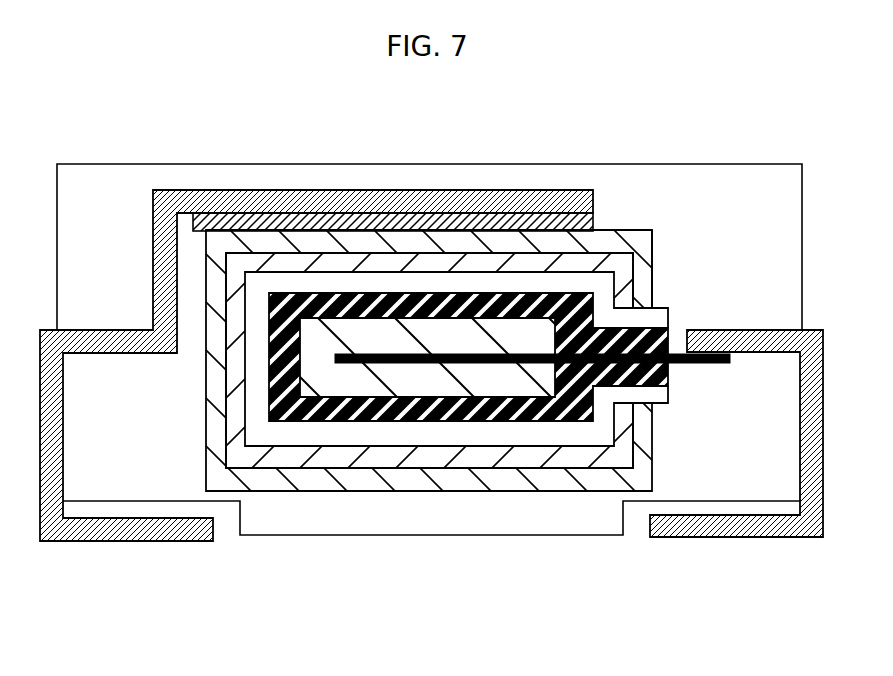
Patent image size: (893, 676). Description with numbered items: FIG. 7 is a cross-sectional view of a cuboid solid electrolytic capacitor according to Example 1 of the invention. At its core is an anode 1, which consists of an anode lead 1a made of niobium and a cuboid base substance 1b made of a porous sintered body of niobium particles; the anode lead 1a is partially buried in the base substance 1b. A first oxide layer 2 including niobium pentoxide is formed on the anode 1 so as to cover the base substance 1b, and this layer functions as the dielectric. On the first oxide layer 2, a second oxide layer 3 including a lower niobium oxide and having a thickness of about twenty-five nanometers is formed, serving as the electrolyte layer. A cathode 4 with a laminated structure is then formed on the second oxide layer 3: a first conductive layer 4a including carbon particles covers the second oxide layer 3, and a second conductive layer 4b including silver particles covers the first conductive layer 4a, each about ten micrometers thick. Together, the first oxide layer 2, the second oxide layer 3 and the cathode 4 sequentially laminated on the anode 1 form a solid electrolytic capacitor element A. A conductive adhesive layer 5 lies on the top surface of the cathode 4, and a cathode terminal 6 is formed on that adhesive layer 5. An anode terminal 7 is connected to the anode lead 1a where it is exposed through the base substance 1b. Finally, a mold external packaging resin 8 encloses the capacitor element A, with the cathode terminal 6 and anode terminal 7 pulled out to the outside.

The anode 1 is at (499, 457).
The anode lead 1a is at (683, 362).
The base substance 1b is at (551, 392).
The first oxide layer 2 is at (323, 422).
The second oxide layer 3 is at (373, 437).
The cathode 4 is at (429, 425).
The first conductive layer 4a is at (447, 458).
The second conductive layer 4b is at (488, 484).
The conductive adhesive layer 5 is at (247, 220).
The cathode terminal 6 is at (175, 541).
The anode terminal 7 is at (740, 537).
The mold external packaging resin 8 is at (113, 210).
The solid electrolytic capacitor element A is at (634, 227).